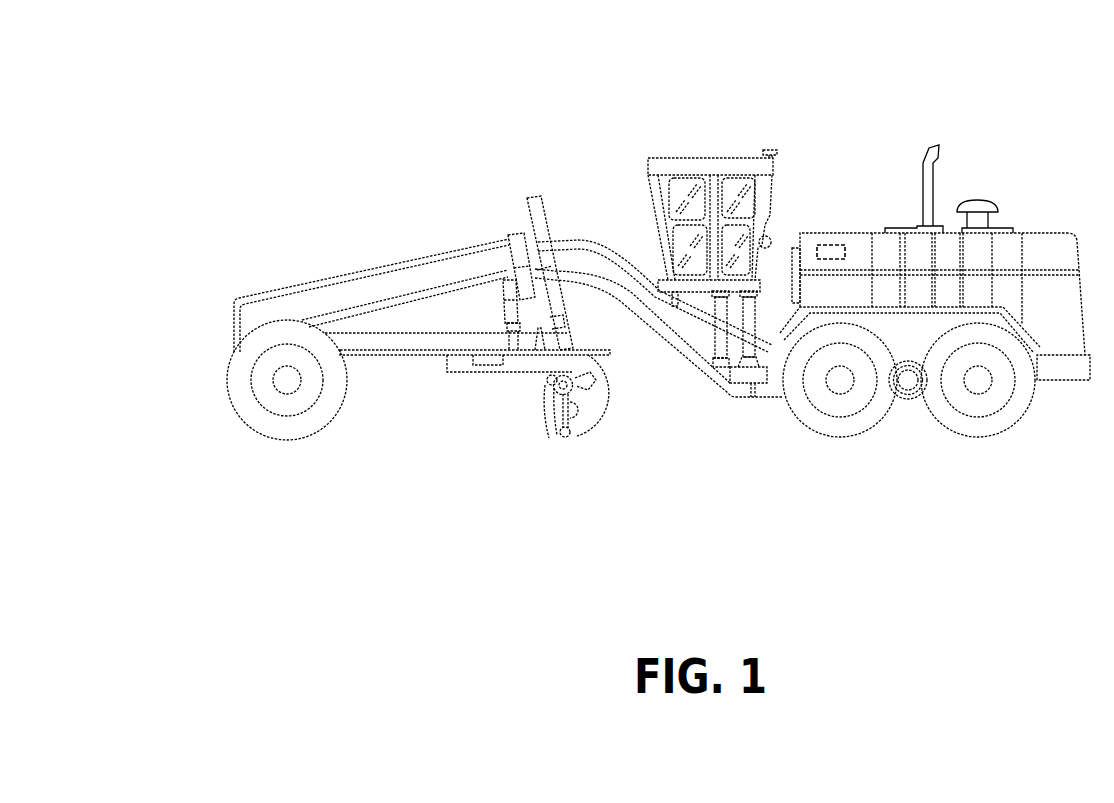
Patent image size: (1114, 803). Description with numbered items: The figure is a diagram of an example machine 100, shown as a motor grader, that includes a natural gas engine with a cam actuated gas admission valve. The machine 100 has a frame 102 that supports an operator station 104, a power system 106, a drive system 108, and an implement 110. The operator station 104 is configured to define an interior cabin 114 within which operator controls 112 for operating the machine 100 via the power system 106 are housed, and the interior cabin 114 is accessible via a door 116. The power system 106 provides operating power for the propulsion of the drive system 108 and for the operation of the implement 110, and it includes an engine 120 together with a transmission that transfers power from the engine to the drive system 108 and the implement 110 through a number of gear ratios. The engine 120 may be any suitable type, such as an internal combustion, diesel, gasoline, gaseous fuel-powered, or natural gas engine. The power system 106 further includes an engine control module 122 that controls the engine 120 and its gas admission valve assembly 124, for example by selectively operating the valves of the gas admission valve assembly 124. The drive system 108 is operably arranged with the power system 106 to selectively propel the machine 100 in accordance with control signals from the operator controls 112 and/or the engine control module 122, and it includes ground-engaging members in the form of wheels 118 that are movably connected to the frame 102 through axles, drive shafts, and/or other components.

The machine 100 is at (422, 69).
The frame 102 is at (712, 335).
The operator station 104 is at (659, 158).
The power system 106 is at (935, 234).
The drive system 108 is at (258, 431).
The implement 110 is at (531, 443).
The operator controls 112 is at (748, 177).
The interior cabin 114 is at (726, 178).
The door 116 is at (711, 178).
The wheels 118 is at (822, 433).
The engine 120 is at (935, 234).
The engine control module 122 is at (832, 244).
The gas admission valve assembly 124 is at (1048, 233).